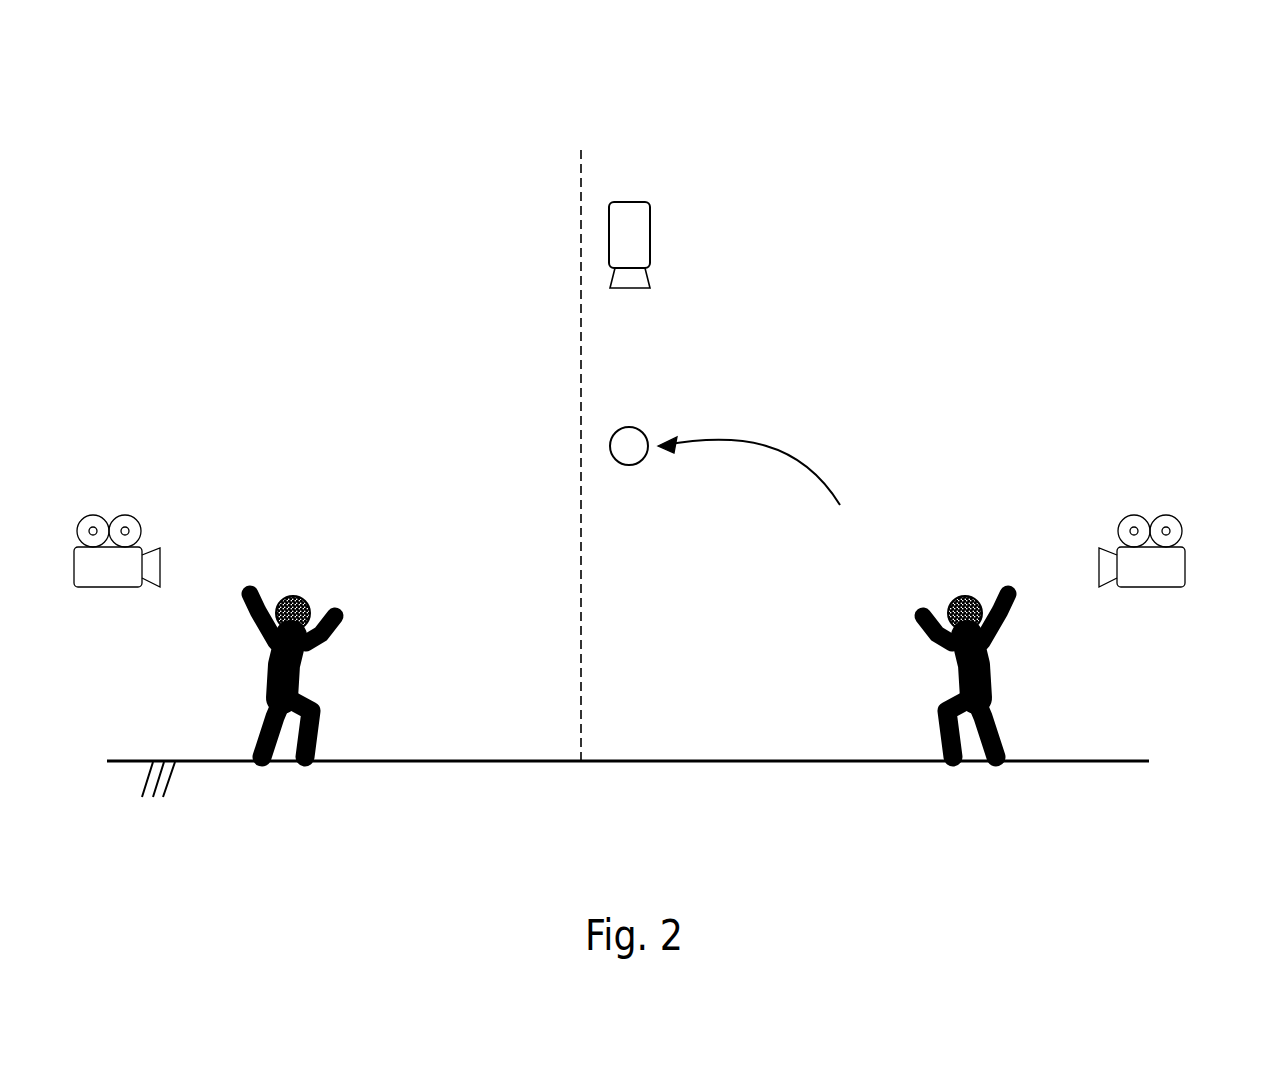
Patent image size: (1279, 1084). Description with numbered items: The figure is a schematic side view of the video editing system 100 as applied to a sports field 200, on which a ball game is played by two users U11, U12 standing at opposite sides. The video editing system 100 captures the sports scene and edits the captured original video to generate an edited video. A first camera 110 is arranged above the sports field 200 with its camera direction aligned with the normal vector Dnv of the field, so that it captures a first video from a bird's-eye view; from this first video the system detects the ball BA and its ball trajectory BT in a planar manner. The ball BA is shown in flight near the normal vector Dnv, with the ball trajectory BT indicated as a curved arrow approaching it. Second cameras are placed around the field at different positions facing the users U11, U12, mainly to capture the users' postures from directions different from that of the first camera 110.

The video editing system 100 is at (1262, 71).
The first camera 110 is at (643, 238).
The sports field 200 is at (1119, 762).
The ball BA is at (628, 436).
The ball trajectory BT is at (766, 437).
The user U11 is at (296, 598).
The user U12 is at (968, 598).
The normal vector Dnv is at (577, 435).